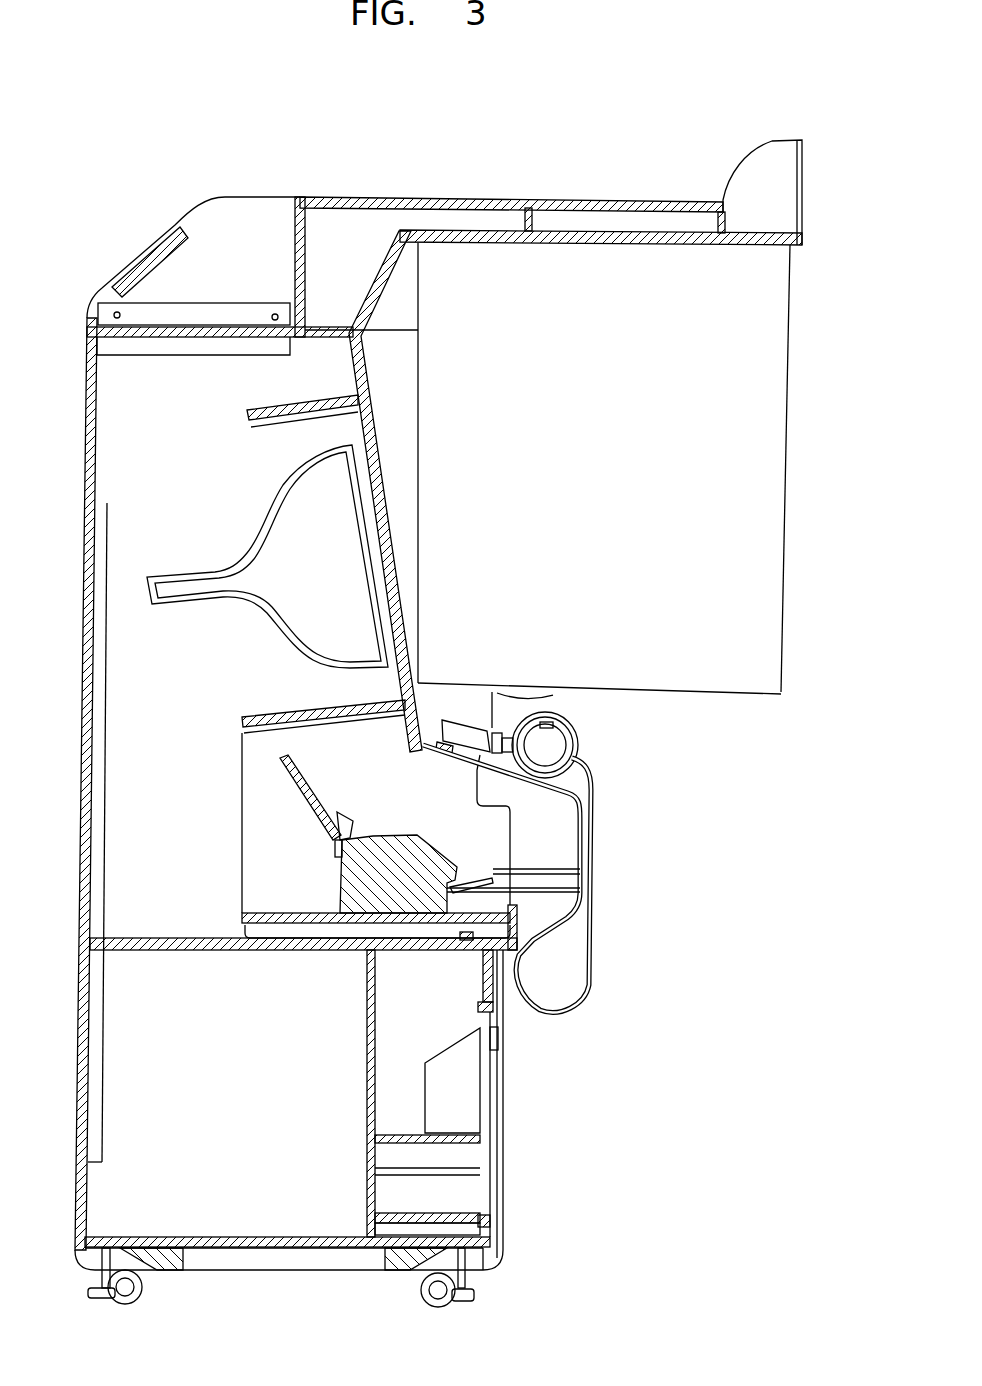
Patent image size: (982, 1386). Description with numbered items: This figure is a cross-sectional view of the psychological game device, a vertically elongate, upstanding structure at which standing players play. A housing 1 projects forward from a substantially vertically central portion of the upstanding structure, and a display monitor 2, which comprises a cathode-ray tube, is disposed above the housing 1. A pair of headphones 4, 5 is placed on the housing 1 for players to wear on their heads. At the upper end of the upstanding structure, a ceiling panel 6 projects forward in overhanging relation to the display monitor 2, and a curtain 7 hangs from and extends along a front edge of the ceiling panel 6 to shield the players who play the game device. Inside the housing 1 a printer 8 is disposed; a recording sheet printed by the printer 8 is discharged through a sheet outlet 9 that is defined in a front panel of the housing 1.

The housing 1 is at (577, 787).
The display monitor 2 is at (284, 503).
The headphones 4 is at (548, 749).
The headphones 5 is at (593, 745).
The ceiling panel 6 is at (763, 230).
The curtain 7 is at (753, 437).
The printer 8 is at (388, 833).
The sheet outlet 9 is at (587, 873).